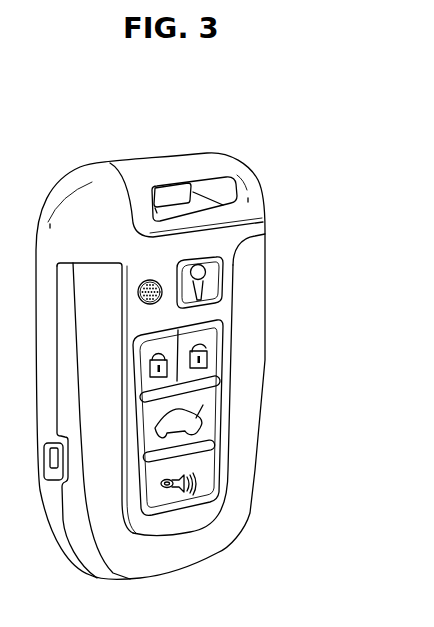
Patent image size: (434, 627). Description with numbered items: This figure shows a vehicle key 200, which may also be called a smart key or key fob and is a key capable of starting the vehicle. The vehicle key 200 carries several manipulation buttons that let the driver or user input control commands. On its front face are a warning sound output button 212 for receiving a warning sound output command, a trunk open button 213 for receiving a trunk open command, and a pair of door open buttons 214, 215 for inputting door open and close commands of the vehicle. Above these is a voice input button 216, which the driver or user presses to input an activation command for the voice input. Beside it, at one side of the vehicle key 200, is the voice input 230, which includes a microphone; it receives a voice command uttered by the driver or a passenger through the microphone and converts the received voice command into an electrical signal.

The vehicle key 200 is at (105, 110).
The warning sound output button 212 is at (197, 477).
The trunk open button 213 is at (207, 427).
The door open button 214 is at (168, 366).
The door open button 215 is at (207, 357).
The voice input button 216 is at (208, 271).
The voice input 230 is at (163, 298).